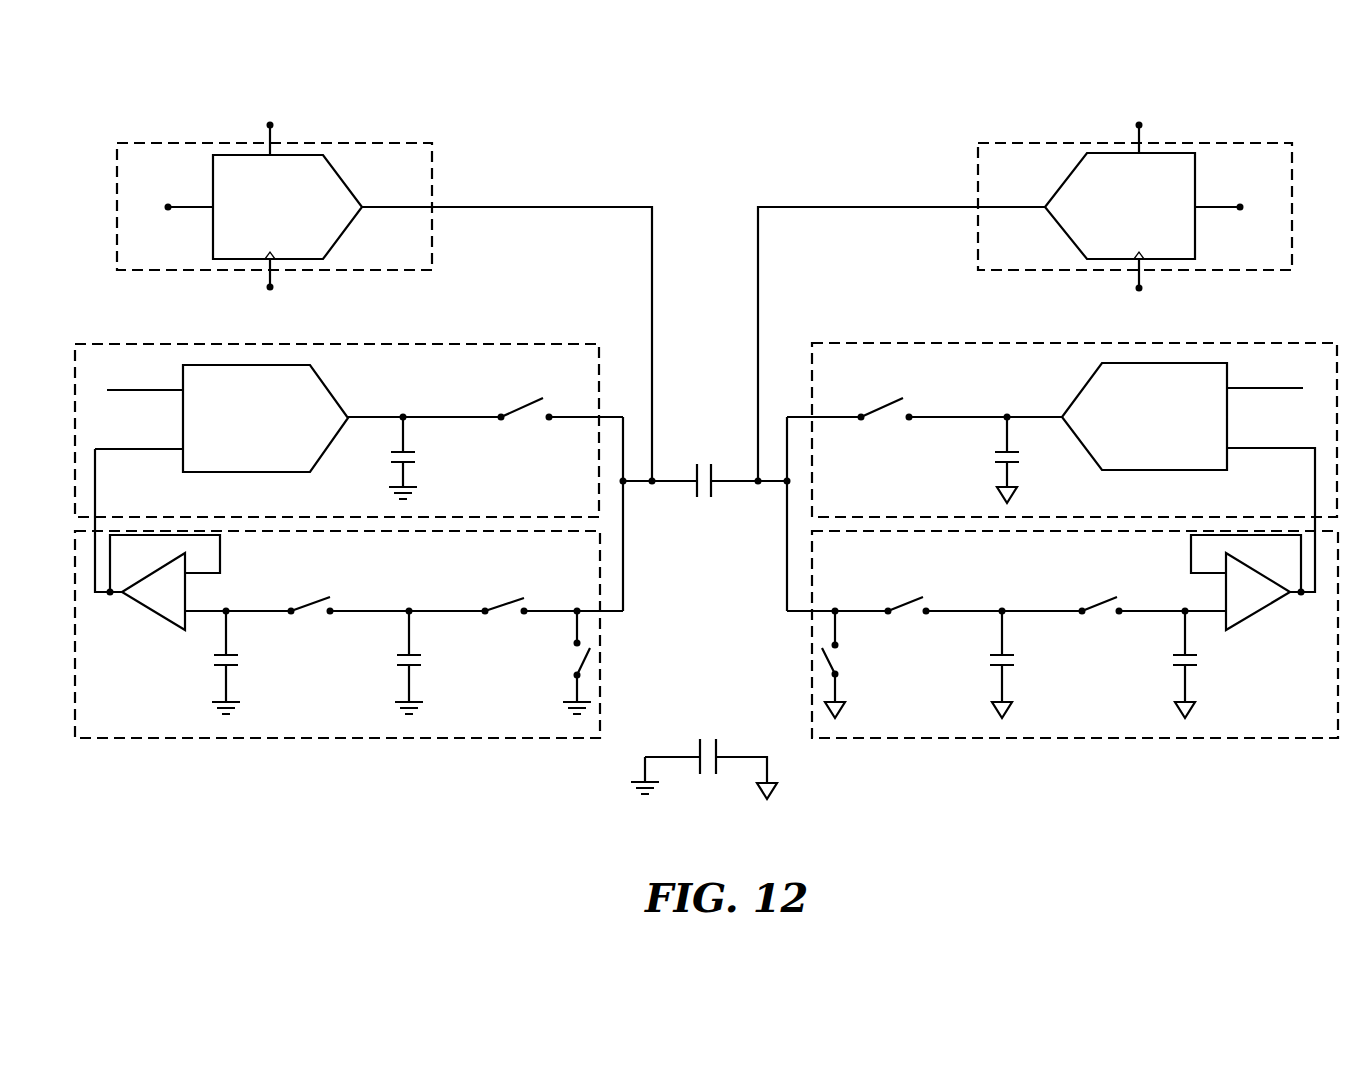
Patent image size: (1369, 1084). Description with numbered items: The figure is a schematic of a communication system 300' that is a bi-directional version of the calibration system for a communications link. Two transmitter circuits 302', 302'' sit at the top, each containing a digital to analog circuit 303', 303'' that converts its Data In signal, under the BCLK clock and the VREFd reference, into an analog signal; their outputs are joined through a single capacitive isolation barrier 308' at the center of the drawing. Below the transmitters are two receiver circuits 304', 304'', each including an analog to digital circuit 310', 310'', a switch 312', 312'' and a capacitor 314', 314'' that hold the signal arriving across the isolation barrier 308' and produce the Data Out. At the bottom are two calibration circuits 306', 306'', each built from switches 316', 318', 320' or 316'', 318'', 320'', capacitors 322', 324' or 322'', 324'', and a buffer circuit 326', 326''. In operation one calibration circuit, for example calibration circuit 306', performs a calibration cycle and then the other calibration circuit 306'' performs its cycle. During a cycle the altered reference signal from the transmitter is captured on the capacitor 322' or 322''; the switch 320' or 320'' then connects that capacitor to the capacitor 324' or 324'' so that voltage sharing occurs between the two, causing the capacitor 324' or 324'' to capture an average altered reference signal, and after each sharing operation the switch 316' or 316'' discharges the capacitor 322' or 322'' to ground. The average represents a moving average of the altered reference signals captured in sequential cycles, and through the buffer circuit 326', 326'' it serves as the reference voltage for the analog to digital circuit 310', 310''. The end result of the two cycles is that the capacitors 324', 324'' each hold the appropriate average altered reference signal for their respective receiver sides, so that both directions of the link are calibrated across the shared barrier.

The communication system 300' is at (703, 450).
The transmitter circuit 302' is at (239, 206).
The digital to analog circuit 303' is at (272, 200).
The receiver circuit 304' is at (321, 409).
The calibration circuit 306' is at (325, 663).
The isolation barrier 308' is at (699, 419).
The analog to digital circuit 310' is at (293, 477).
The switch 312' is at (561, 404).
The capacitor 314' is at (445, 458).
The switch 316' is at (618, 662).
The switch 318' is at (553, 582).
The switch 320' is at (368, 589).
The capacitor 322' is at (443, 662).
The capacitor 324' is at (261, 666).
The buffer circuit 326' is at (199, 606).
The transmitter circuit 302'' is at (1173, 206).
The digital to analog circuit 303'' is at (1142, 203).
The receiver circuit 304'' is at (1090, 410).
The calibration circuit 306'' is at (1090, 663).
The analog to digital circuit 310'' is at (1124, 478).
The switch 312'' is at (850, 404).
The capacitor 314'' is at (985, 460).
The switch 316'' is at (819, 663).
The switch 318'' is at (957, 598).
The switch 320'' is at (1123, 597).
The capacitor 322'' is at (1010, 664).
The capacitor 324'' is at (1173, 665).
The buffer circuit 326'' is at (1255, 604).